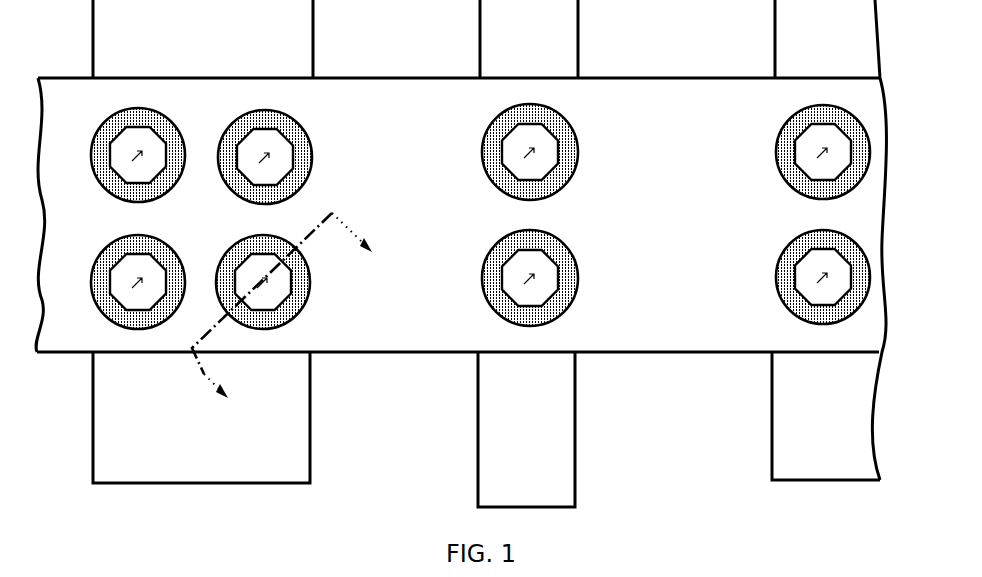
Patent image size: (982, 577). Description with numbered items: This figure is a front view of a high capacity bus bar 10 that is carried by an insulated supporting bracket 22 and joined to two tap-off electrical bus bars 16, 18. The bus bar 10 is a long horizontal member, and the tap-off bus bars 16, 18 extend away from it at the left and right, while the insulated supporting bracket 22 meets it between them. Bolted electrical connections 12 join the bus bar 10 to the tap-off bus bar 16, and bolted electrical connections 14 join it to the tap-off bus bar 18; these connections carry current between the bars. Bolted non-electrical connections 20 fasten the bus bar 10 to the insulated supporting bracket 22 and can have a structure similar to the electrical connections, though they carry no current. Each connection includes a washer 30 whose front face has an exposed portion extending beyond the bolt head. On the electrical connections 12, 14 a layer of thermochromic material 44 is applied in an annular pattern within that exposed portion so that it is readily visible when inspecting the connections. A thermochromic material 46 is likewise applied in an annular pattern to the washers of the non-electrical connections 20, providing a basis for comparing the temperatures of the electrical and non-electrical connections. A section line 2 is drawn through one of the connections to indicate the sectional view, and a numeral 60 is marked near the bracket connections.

The section line 2- 2 is at (278, 297).
The high capacity bus bar 10 is at (424, 169).
The bolted electrical connection 12 is at (125, 132).
The bolted electrical connection 14 is at (802, 124).
The tap-off bus bar 16 is at (212, 452).
The tap-off bus bar 18 is at (836, 427).
The bolted non-electrical connection 20 is at (560, 133).
The insulated supporting bracket 22 is at (542, 463).
The washer 30 is at (165, 111).
The layer of thermochromic material 44 is at (100, 188).
The thermochromic material 46 is at (495, 117).
The washer 60 is at (566, 192).